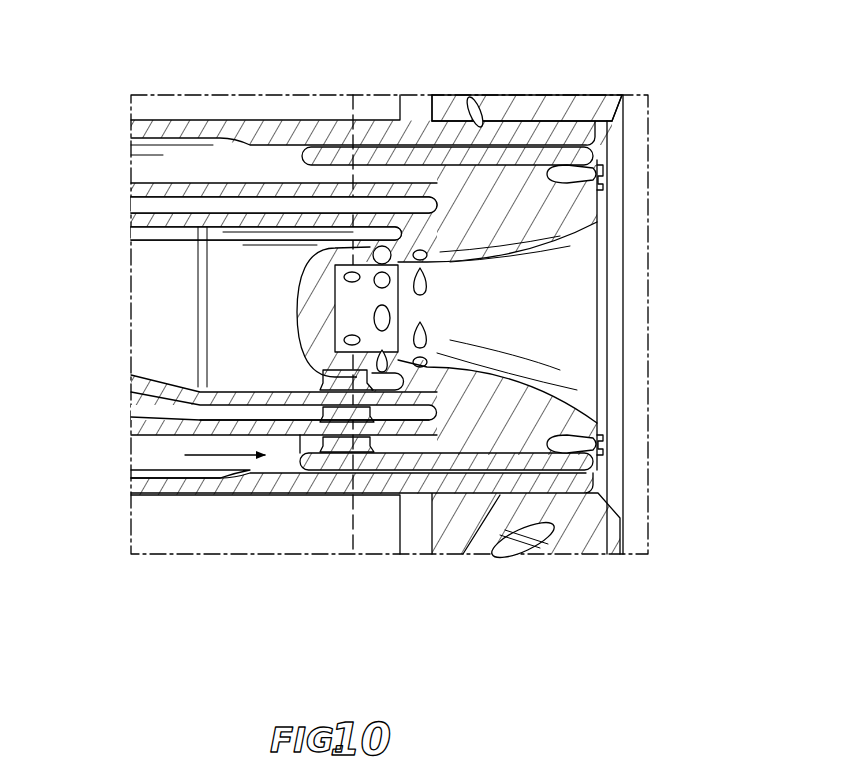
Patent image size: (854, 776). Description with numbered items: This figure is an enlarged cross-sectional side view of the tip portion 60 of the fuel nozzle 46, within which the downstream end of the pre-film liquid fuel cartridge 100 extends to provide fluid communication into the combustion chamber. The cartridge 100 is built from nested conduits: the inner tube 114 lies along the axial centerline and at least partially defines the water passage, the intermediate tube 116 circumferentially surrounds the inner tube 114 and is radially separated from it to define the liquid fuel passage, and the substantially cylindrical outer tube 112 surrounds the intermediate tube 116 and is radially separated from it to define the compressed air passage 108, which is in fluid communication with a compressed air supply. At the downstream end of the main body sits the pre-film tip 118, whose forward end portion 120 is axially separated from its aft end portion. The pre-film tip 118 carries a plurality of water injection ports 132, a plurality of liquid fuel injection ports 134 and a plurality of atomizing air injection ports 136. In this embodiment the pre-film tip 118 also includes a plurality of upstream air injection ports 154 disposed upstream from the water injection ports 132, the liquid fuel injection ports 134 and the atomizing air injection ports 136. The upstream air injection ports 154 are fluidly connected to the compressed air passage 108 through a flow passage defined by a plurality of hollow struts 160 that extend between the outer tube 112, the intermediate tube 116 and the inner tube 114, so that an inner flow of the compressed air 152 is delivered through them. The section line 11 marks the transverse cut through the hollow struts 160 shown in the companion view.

The section line 11 is at (350, 113).
The fuel nozzle 46 is at (498, 94).
The tip portion 60 is at (527, 93).
The pre-film liquid fuel cartridge 100 is at (612, 124).
The compressed air passage 108 is at (145, 452).
The outer tube 112 is at (383, 495).
The inner tube 114 is at (137, 388).
The intermediate tube 116 is at (137, 402).
The pre-film tip 118 is at (556, 198).
The forward end portion 120 is at (303, 318).
The water injection ports 132 is at (385, 320).
The liquid fuel injection ports 134 is at (423, 338).
The atomizing air injection ports 136 is at (602, 449).
The compressed air 152 is at (218, 455).
The upstream air injection ports 154 is at (350, 278).
The hollow struts 160 is at (365, 410).